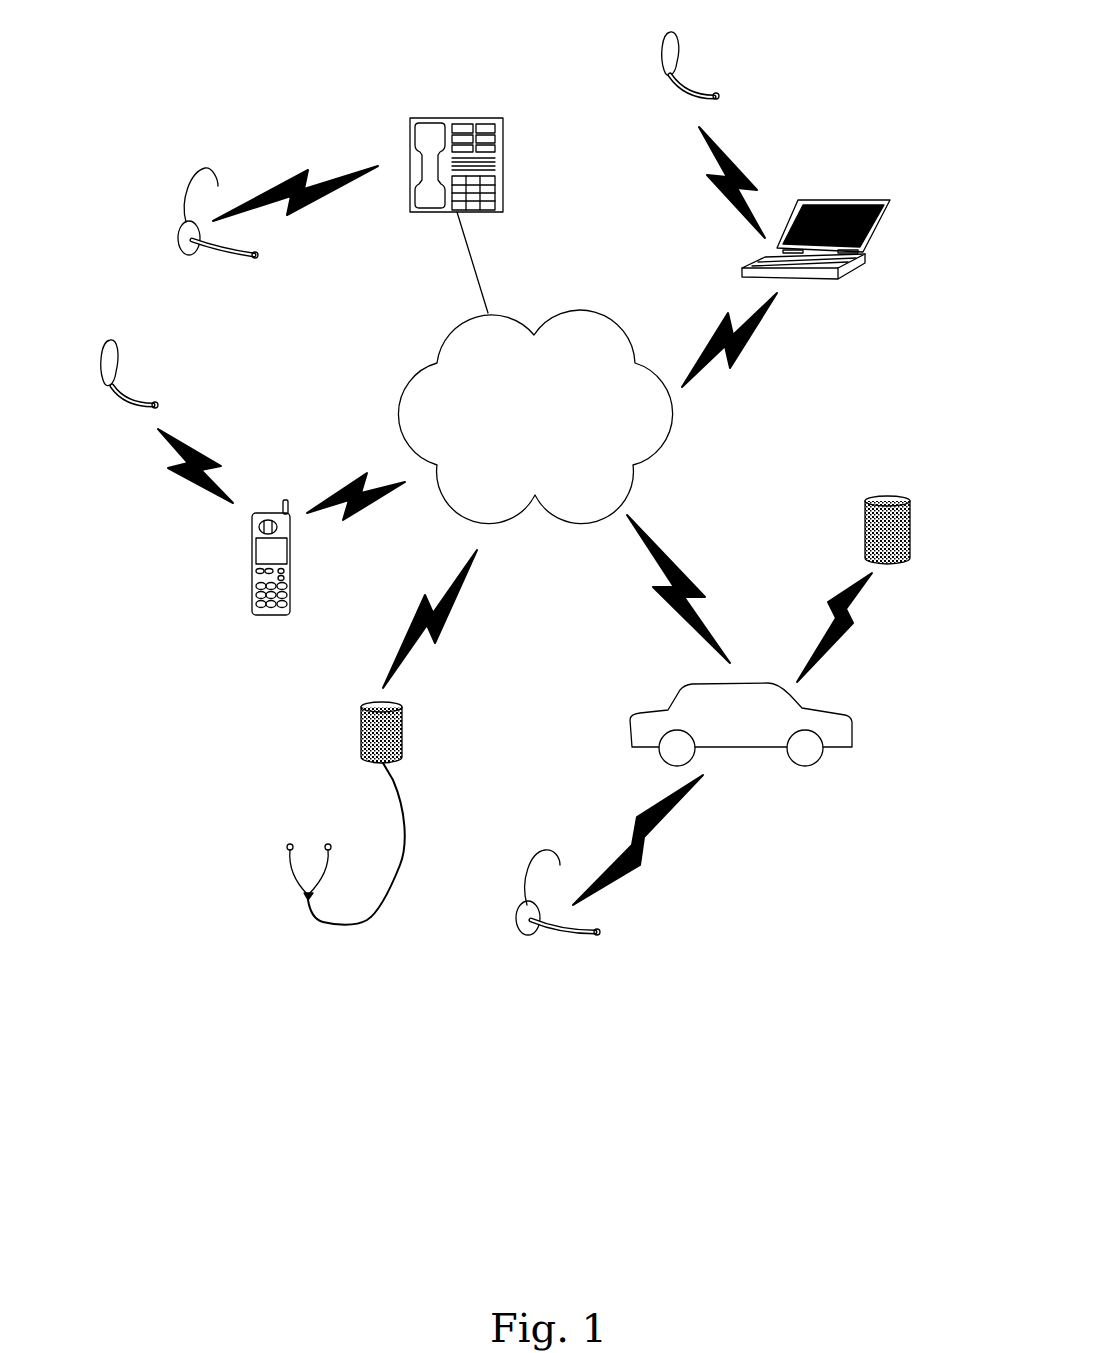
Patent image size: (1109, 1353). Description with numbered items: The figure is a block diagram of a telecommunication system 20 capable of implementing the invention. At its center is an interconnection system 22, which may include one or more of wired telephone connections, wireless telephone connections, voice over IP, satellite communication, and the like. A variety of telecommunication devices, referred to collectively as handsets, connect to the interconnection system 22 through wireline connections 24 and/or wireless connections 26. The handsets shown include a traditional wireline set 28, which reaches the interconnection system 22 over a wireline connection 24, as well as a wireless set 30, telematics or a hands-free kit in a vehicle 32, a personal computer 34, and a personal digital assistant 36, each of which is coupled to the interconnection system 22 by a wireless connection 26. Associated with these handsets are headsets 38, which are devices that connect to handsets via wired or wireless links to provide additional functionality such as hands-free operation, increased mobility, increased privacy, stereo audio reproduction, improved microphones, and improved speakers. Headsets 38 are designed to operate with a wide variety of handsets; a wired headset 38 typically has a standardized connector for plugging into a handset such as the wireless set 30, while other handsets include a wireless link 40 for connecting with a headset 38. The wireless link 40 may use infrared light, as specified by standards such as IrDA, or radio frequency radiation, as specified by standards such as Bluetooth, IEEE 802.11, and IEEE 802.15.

The telecommunication system 20 is at (180, 1091).
The interconnection system 22 is at (544, 431).
The wireline connection 24 is at (480, 268).
The wireless connection 26 is at (367, 507).
The traditional wireline set 28 is at (458, 118).
The wireless set 30 is at (252, 588).
The vehicle 32 is at (857, 735).
The personal computer 34 is at (852, 270).
The personal digital assistant 36 is at (402, 722).
The headset 38 is at (173, 238).
The wireless link 40 is at (382, 905).